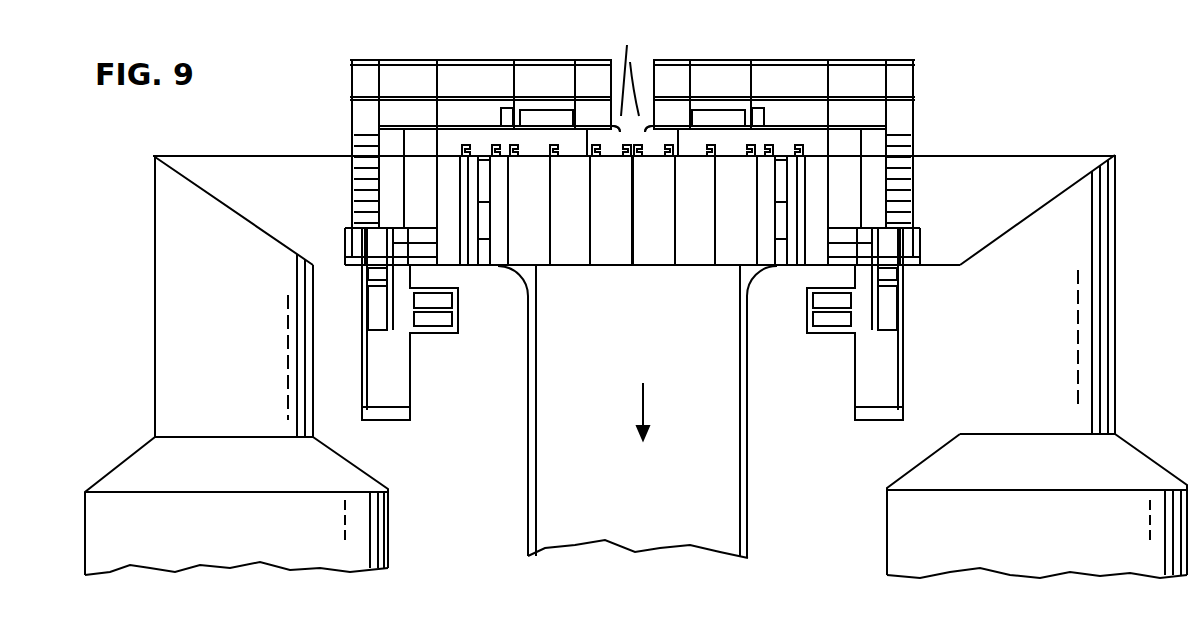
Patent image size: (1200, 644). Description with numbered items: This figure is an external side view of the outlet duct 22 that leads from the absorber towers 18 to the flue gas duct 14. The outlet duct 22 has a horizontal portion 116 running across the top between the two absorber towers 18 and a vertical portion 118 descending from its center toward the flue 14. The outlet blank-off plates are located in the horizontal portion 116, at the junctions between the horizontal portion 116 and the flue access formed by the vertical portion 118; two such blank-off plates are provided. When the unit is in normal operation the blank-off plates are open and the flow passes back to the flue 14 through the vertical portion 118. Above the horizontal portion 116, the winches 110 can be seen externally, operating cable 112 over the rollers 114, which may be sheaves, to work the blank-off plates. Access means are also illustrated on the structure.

The flue gas duct 14 is at (645, 458).
The absorber towers 18 is at (215, 537).
The outlet duct 22 is at (198, 372).
The winches 110 is at (762, 112).
The cable 112 is at (712, 110).
The rollers 114 is at (630, 78).
The horizontal portion of the outlet duct 116 is at (616, 242).
The vertical portion of the outlet duct 118 is at (568, 357).